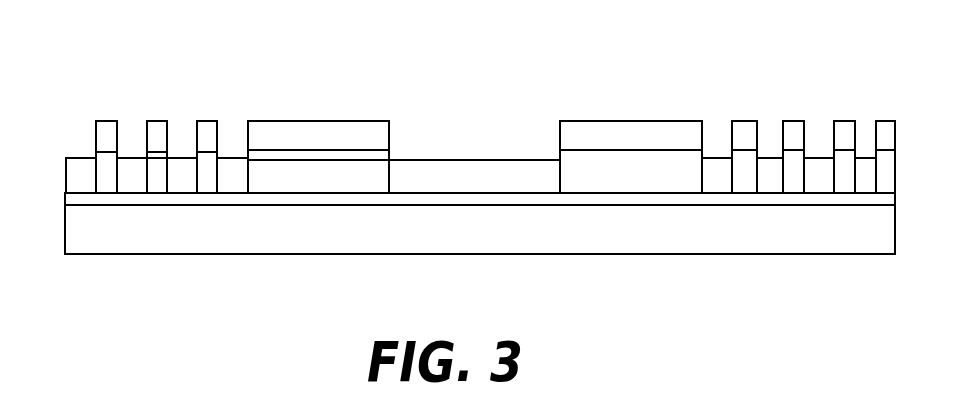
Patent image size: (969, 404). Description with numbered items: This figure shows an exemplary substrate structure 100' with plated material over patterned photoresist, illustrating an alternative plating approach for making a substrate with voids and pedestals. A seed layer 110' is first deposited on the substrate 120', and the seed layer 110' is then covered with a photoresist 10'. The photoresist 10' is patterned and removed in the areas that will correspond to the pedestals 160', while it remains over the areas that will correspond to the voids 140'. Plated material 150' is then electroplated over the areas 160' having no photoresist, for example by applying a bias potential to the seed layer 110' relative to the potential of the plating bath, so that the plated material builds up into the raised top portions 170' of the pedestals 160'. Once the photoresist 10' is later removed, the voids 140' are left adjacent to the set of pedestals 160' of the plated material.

The semiconductor structure 100' is at (461, 161).
The seed layer 110' is at (461, 149).
The substrate 120' is at (475, 254).
The voids 140' is at (480, 212).
The second material layer 150' is at (495, 126).
The pedestals 160' is at (210, 108).
The top layer 170' is at (290, 106).
The photoresist 10' is at (268, 202).